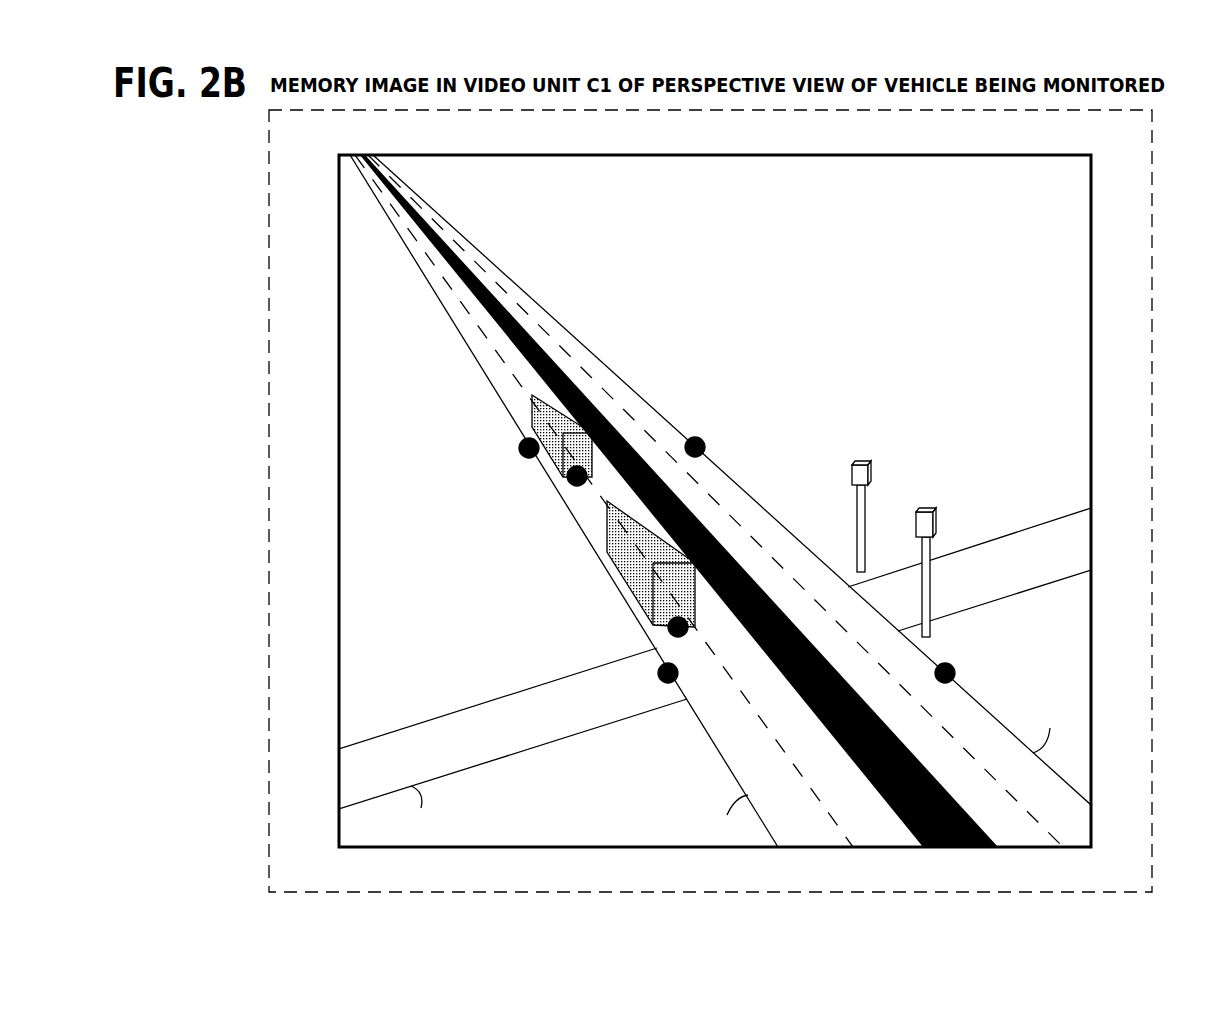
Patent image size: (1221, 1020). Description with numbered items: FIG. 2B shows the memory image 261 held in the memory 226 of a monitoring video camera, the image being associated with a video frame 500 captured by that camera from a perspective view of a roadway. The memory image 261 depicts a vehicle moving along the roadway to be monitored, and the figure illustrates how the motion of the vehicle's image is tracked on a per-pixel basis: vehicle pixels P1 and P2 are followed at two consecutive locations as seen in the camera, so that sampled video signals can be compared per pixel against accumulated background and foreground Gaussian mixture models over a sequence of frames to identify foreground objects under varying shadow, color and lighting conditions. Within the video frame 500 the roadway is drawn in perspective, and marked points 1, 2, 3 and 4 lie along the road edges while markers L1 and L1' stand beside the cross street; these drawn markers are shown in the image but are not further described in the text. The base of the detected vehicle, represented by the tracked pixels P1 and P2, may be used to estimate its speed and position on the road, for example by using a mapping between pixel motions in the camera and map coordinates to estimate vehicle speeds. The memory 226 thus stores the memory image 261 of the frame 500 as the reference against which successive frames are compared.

The video frame 500 is at (328, 222).
The memory 226 is at (739, 477).
The memory image 261 is at (1058, 305).
The tracked position 1 is at (519, 448).
The tracked position 2 is at (705, 447).
The tracked position 3 is at (657, 673).
The tracked position 4 is at (956, 670).
The vehicle pixel P1 is at (565, 476).
The vehicle pixel P2 is at (668, 628).
The light pole L1 is at (913, 572).
The light pole L1' is at (849, 516).